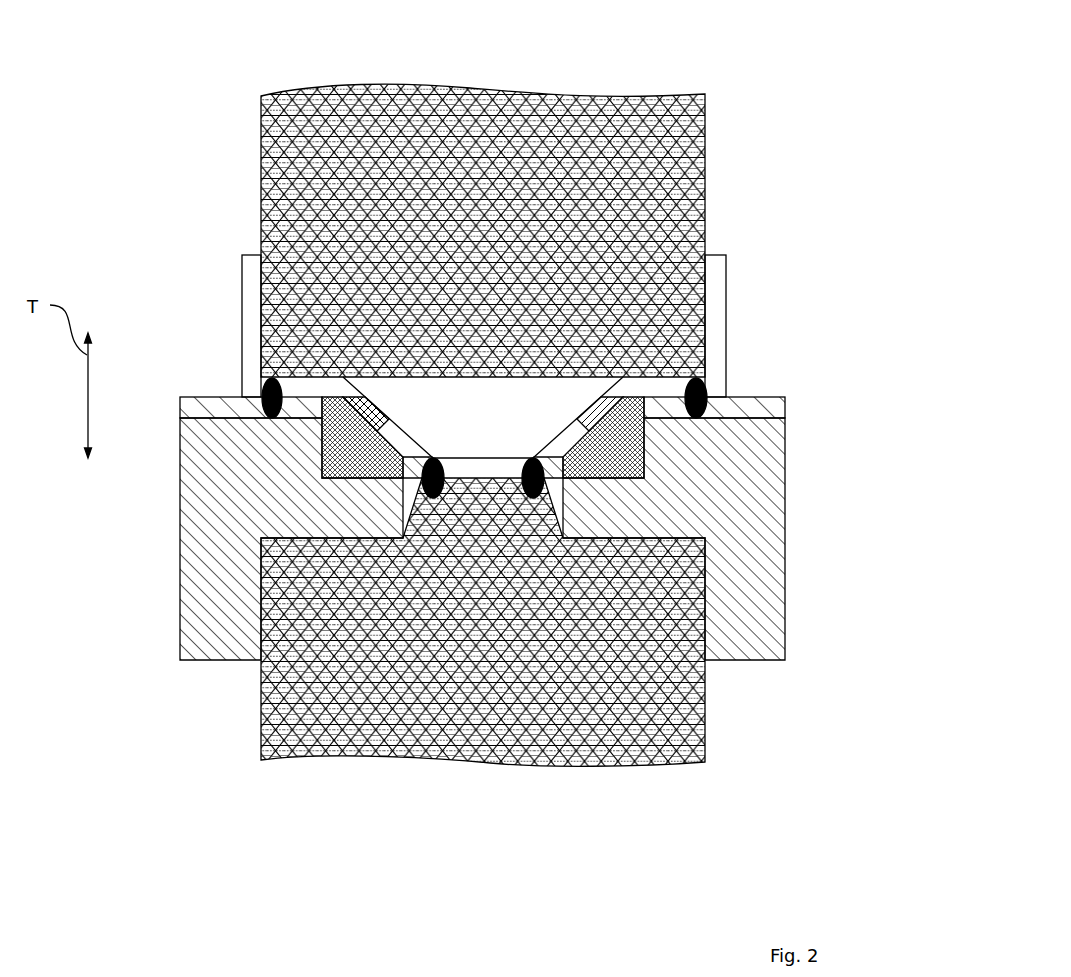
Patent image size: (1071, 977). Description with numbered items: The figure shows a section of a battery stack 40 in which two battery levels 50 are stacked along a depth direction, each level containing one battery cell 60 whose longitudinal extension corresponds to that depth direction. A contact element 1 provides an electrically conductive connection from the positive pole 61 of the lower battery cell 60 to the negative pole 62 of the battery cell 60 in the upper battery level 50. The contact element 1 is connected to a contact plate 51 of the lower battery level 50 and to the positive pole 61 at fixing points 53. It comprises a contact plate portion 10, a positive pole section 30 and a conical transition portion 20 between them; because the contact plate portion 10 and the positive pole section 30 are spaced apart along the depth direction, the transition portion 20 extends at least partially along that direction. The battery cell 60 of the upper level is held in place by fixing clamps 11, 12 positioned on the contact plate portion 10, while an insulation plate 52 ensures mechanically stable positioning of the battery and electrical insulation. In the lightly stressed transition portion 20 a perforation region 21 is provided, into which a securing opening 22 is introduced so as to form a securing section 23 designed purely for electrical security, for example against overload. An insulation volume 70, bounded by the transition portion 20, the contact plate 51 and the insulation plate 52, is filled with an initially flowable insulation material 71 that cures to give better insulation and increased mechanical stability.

The contact element 1 is at (509, 403).
The contact plate portion 10 is at (474, 440).
The fixing clamp 11 is at (481, 308).
The fixing clamps 12 is at (717, 310).
The transition portion 20 is at (400, 442).
The perforation region 21 is at (394, 374).
The securing opening 22 is at (402, 402).
The securing section 23 is at (600, 413).
The positive pole section 30 is at (473, 468).
The battery stack 40 is at (416, 403).
The battery level 50 is at (542, 397).
The contact plate 51 is at (186, 400).
The insulation plate 52 is at (183, 545).
The fixing point 53 is at (262, 393).
The battery cell 60 is at (513, 439).
The positive pole 61 is at (493, 531).
The negative pole 62 is at (504, 291).
The insulation volume 70 is at (424, 442).
The insulation material 71 is at (325, 445).